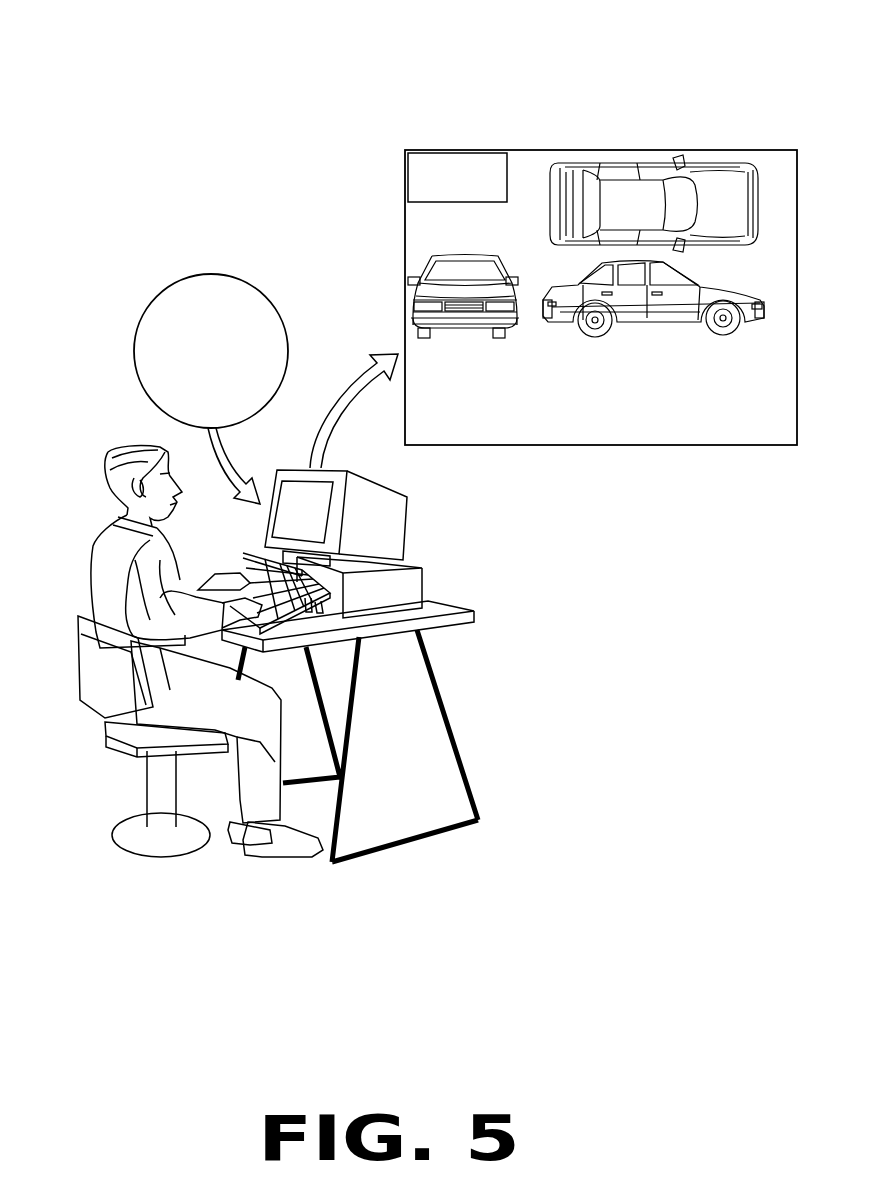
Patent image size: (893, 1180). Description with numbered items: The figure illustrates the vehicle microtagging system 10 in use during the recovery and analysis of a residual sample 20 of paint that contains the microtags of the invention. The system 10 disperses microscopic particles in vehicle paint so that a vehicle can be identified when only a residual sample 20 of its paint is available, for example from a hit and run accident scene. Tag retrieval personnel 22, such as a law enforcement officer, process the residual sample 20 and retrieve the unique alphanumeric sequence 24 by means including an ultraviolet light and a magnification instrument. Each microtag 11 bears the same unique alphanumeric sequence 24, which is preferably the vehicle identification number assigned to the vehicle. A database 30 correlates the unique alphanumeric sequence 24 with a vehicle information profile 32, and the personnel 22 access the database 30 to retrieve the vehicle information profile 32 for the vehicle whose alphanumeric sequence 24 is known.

The vehicle microtagging system 10 is at (720, 97).
The microtag 11 is at (198, 343).
The residual sample 20 is at (230, 275).
The tag retrieval personnel 22 is at (117, 447).
The unique alphanumeric sequence 24 is at (268, 343).
The database 30 is at (422, 573).
The vehicle information profile 32 is at (608, 445).